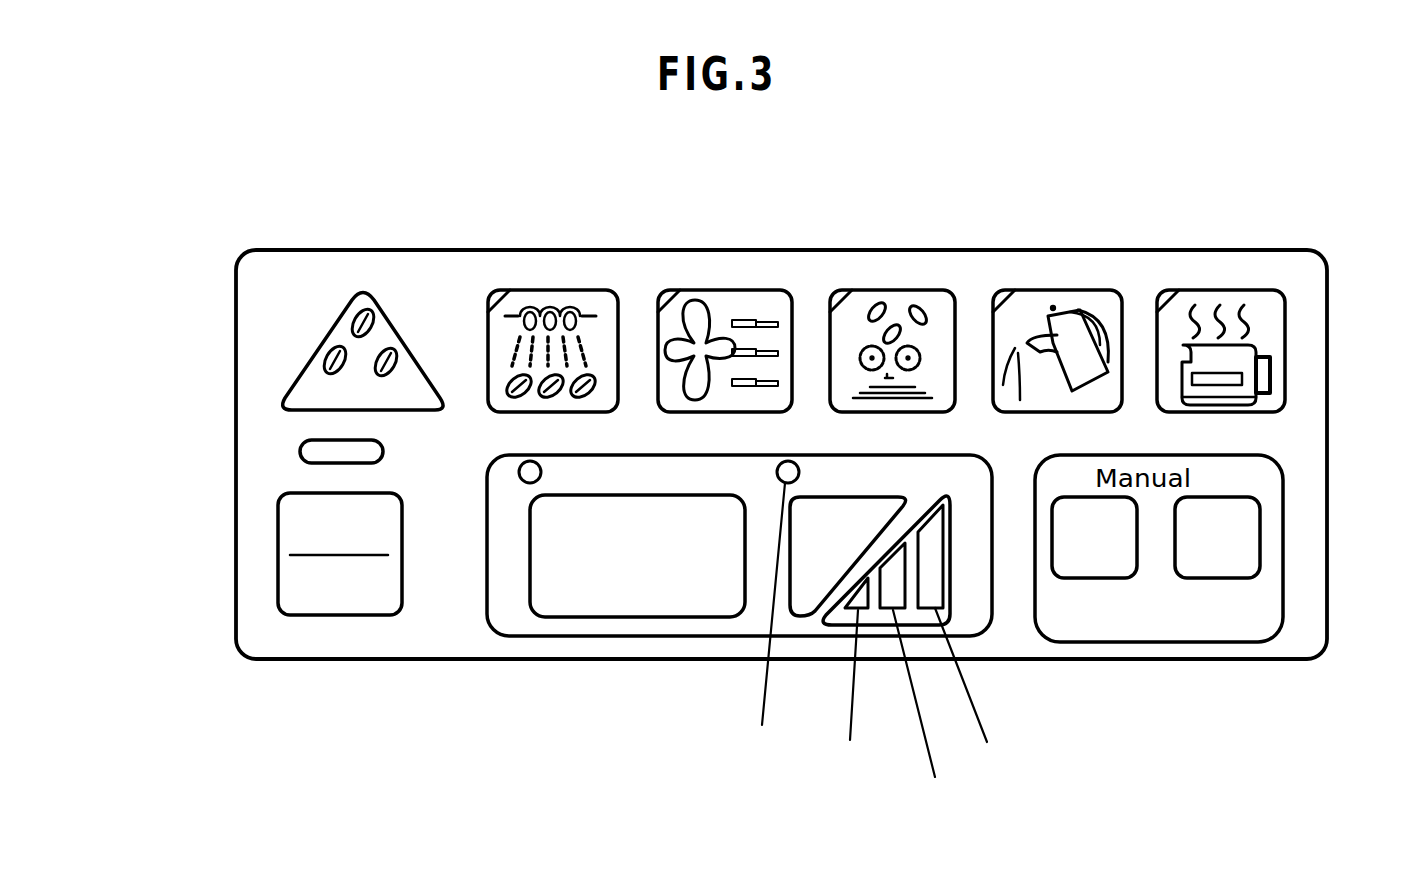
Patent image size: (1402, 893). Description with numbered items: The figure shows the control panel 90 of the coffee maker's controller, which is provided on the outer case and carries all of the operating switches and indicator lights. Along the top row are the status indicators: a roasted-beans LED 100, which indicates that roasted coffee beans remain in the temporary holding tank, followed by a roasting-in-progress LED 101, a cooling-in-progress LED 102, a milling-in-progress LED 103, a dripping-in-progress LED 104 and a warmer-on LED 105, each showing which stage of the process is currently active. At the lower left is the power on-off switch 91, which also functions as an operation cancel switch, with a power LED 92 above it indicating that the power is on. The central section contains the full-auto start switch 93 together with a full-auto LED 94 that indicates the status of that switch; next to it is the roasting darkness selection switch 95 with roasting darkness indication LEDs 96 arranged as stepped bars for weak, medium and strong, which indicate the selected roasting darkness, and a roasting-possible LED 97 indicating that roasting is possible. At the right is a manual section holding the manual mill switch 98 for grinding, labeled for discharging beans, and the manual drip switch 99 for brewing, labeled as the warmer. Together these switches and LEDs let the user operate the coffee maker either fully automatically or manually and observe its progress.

The control panel 90 is at (453, 249).
The power on-off switch 91 is at (310, 615).
The power LED 92 is at (300, 443).
The full-auto start switch 93 is at (632, 617).
The full-auto LED 94 is at (528, 479).
The roasting darkness selection switch 95 is at (797, 617).
The roasting darkness indication LEDs 96 is at (887, 627).
The roasting-possible LED 97 is at (812, 562).
The manual mill switch 98 is at (1052, 535).
The manual drip switch 99 is at (1262, 515).
The roasted-beans LED 100 is at (350, 305).
The roasting-in-progress LED 101 is at (567, 290).
The cooling-in-progress LED 102 is at (718, 290).
The milling-in-progress LED 103 is at (887, 290).
The dripping-in-progress LED 104 is at (1075, 290).
The warmer-on LED 105 is at (1220, 290).